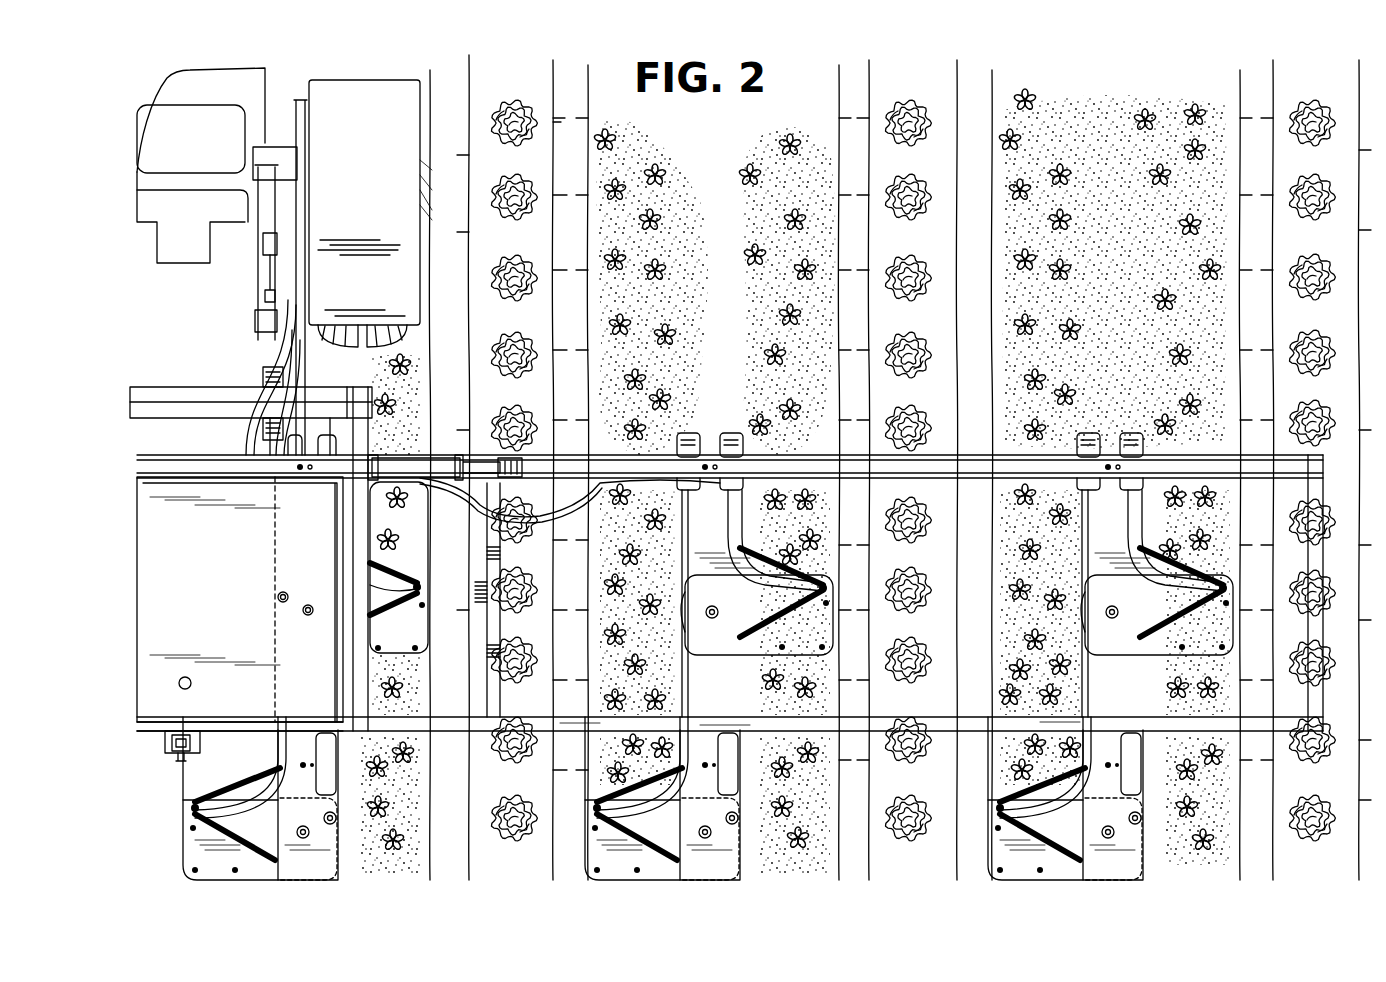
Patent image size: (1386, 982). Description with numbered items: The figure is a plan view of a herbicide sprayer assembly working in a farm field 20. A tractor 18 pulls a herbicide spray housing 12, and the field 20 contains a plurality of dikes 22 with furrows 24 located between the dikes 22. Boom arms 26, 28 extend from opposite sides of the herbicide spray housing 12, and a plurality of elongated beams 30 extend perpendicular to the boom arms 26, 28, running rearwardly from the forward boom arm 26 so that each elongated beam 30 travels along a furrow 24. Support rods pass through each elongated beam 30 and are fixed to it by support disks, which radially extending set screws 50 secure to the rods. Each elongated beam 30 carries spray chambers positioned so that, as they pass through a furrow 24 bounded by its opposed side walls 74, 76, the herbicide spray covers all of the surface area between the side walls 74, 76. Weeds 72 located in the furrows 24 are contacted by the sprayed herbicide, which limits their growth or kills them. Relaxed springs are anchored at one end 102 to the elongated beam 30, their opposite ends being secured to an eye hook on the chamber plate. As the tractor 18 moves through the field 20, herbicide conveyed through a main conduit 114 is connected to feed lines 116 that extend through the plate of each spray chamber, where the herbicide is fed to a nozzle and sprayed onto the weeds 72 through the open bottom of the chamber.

The herbicide spray housing 12 is at (229, 554).
The tractor 18 is at (279, 72).
The farm field 20 is at (1060, 73).
The dikes 22 is at (508, 97).
The furrows 24 is at (798, 124).
The forward boom arm 26 is at (655, 455).
The boom arm 28 is at (930, 735).
The elongated beam 30 is at (725, 534).
The set screws 50 is at (730, 765).
The weeds 72 is at (665, 268).
The furrow side wall 74 is at (865, 192).
The furrow side wall 76 is at (583, 192).
The spring anchor end 102 is at (745, 510).
The main conduit 114 is at (570, 597).
The feed lines 116 is at (690, 690).